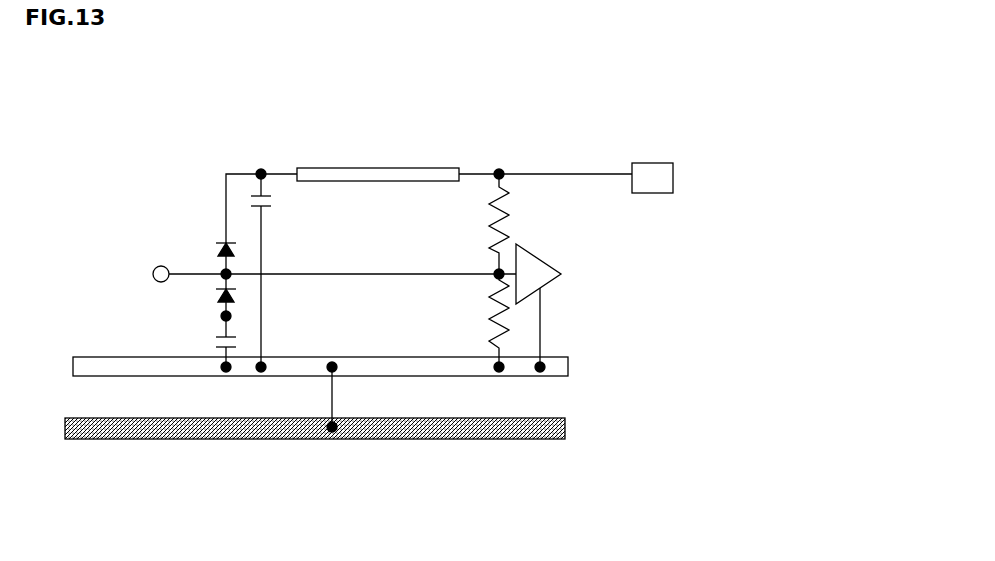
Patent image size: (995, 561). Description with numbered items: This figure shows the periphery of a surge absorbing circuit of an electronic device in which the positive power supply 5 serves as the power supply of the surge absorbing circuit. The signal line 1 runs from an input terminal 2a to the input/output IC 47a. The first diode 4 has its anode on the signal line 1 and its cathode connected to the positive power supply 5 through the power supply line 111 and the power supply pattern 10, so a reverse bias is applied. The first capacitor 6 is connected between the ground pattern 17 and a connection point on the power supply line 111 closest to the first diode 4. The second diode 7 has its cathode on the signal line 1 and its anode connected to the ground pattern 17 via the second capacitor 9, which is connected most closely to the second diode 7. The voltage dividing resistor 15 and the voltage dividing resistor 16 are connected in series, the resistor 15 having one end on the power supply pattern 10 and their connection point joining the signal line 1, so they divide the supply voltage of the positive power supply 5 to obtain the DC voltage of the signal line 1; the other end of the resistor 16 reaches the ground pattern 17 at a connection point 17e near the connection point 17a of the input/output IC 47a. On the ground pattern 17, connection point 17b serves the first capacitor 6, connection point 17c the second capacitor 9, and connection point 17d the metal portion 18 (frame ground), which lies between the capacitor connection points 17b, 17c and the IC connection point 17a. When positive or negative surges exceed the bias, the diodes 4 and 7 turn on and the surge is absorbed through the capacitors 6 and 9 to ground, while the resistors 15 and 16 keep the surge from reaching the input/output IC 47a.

The power supply line 111 is at (239, 171).
The first diode 4 is at (207, 239).
The input terminal 2a is at (151, 265).
The second diode 7 is at (209, 297).
The second capacitor 9 is at (209, 343).
The first capacitor 6 is at (271, 187).
The power supply pattern 10 is at (438, 158).
The signal line 1 is at (346, 265).
The positive power supply 5 is at (653, 173).
The voltage dividing resistor 15 is at (521, 210).
The input/output IC 47a is at (549, 255).
The voltage dividing resistor 16 is at (509, 317).
The ground pattern 17 is at (419, 371).
The connection point 17a is at (547, 378).
The connection point 17b is at (263, 378).
The connection point 17c is at (222, 378).
The connection point 17d is at (338, 373).
The connection point 17e is at (502, 381).
The metal portion 18 is at (556, 431).